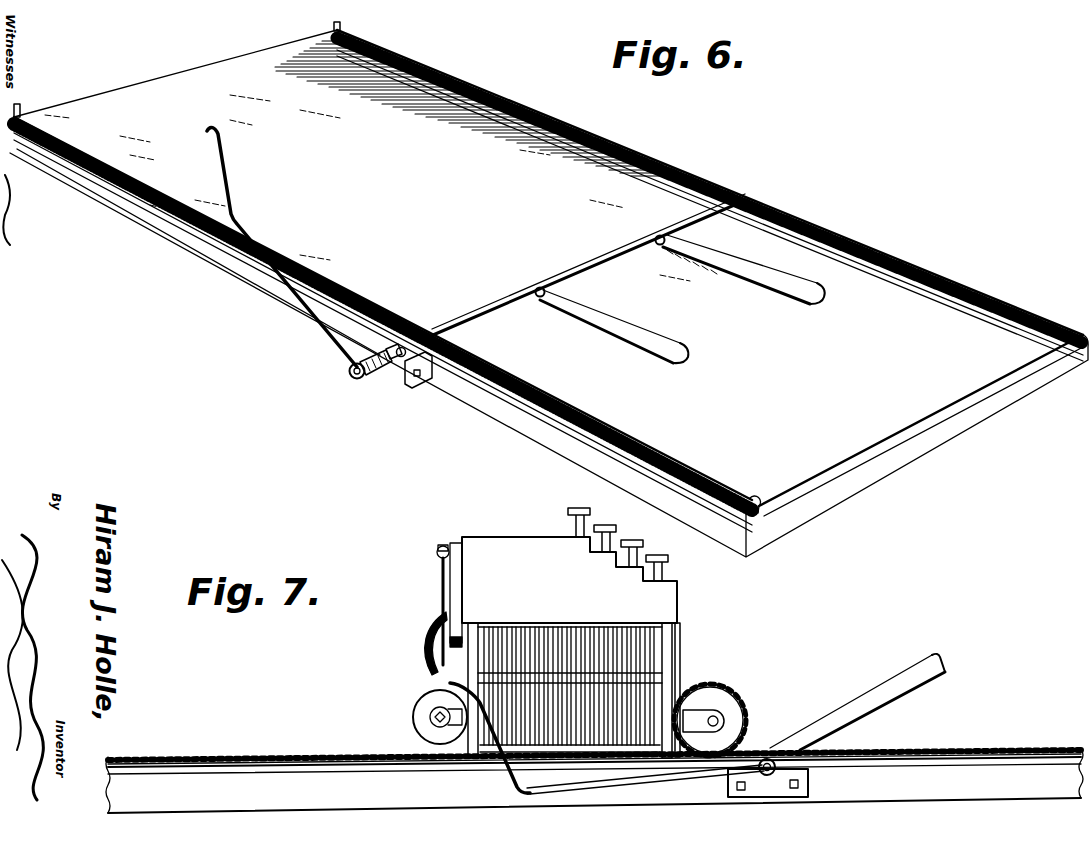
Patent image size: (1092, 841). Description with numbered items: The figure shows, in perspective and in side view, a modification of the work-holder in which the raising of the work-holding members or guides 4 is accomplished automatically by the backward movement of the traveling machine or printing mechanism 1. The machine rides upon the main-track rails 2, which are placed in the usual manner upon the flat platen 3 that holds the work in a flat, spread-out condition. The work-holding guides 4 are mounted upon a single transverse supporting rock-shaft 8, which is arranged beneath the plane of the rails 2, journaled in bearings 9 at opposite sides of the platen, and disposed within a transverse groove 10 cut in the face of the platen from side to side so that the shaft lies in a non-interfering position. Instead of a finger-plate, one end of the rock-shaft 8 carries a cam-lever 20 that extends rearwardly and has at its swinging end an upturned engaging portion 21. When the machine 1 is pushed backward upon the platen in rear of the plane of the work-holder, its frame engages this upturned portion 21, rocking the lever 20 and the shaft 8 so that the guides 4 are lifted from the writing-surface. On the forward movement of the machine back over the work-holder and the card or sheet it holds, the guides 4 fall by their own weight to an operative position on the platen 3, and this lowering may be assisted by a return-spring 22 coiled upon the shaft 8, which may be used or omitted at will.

In FIG. 7, the traveling machine or printing mechanism 1 is at (437, 591).
In FIG. 6, the main-track rails 2 is at (526, 108).
In FIG. 7, the main-track rails 2 is at (312, 761).
In FIG. 6, the flat platen 3 is at (549, 289).
In FIG. 6, the work-holding members or guides 4 is at (637, 330).
In FIG. 7, the work-holding members or guides 4 is at (862, 690).
In FIG. 6, the supporting rock-shaft 8 is at (485, 311).
In FIG. 7, the supporting rock-shaft 8 is at (771, 754).
In FIG. 6, the bearings 9 is at (413, 378).
In FIG. 7, the bearings 9 is at (808, 778).
In FIG. 6, the transverse groove 10 is at (585, 263).
In FIG. 6, the cam-lever 20 is at (302, 306).
In FIG. 7, the cam-lever 20 is at (651, 777).
In FIG. 6, the upturned engaging portion 21 is at (232, 172).
In FIG. 7, the upturned engaging portion 21 is at (500, 746).
In FIG. 6, the return-spring 22 is at (392, 370).